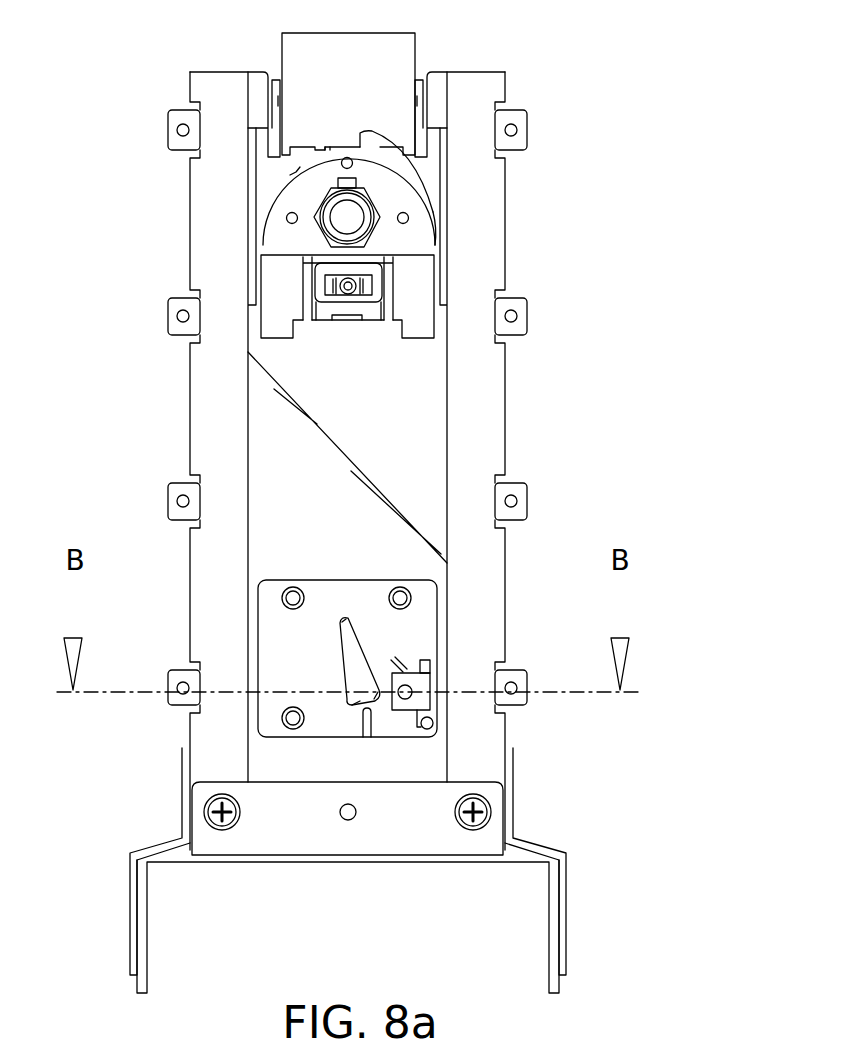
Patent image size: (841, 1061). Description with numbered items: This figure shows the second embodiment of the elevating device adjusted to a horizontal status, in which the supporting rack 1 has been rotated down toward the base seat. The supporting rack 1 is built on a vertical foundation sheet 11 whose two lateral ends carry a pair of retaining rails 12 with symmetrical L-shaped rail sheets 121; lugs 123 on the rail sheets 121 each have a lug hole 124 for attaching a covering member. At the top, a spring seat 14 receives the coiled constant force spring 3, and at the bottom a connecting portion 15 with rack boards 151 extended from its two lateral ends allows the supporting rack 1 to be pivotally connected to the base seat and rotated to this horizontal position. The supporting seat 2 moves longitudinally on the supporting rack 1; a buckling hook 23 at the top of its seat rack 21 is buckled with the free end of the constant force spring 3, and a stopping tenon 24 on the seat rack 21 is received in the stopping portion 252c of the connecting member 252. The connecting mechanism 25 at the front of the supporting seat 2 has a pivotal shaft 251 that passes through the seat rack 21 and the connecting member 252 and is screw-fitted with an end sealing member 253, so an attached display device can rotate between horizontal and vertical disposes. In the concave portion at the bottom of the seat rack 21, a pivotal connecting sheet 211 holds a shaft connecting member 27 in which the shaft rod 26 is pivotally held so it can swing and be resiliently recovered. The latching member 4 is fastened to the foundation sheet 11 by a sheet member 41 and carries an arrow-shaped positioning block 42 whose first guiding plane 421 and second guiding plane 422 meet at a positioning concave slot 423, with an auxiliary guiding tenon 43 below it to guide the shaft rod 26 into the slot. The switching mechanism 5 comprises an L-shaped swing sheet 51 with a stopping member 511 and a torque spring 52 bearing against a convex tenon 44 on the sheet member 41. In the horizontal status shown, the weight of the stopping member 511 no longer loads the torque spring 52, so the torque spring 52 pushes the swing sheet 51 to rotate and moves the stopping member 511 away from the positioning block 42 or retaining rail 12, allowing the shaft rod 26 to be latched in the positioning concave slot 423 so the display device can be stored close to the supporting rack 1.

The supporting rack 1 is at (422, 377).
The foundation sheet 11 is at (423, 424).
The retaining rails 12 is at (210, 238).
The rail sheets 121 is at (220, 367).
The lugs 123 is at (515, 493).
The lug hole 124 is at (513, 316).
The spring seat 14 is at (420, 119).
The connecting portion 15 is at (385, 875).
The rack boards 151 is at (553, 912).
The supporting seat 2 is at (420, 278).
The seat rack 21 is at (277, 281).
The pivotal connecting sheet 211 is at (312, 273).
The buckling hook 23 is at (294, 151).
The stopping tenon 24 is at (330, 147).
The connecting mechanism 25 is at (344, 160).
The pivotal shaft 251 is at (352, 213).
The connecting member 252 is at (290, 201).
The stopping portion 252c is at (288, 175).
The end sealing member 253 is at (320, 209).
The shaft rod 26 is at (348, 291).
The shaft connecting member 27 is at (373, 294).
The constant force spring 3 is at (385, 48).
The latching member 4 is at (359, 604).
The sheet member 41 is at (273, 629).
The arrow-shaped positioning block 42 is at (345, 641).
The first guiding plane 421 is at (406, 647).
The second guiding plane 422 is at (343, 674).
The positioning concave slot 423 is at (360, 703).
The auxiliary guiding tenon 43 is at (372, 723).
The convex tenon 44 is at (433, 725).
The switching mechanism 5 is at (497, 634).
The L-shaped swing sheet 51 is at (422, 689).
The stopping member 511 is at (431, 673).
The torque spring 52 is at (430, 667).